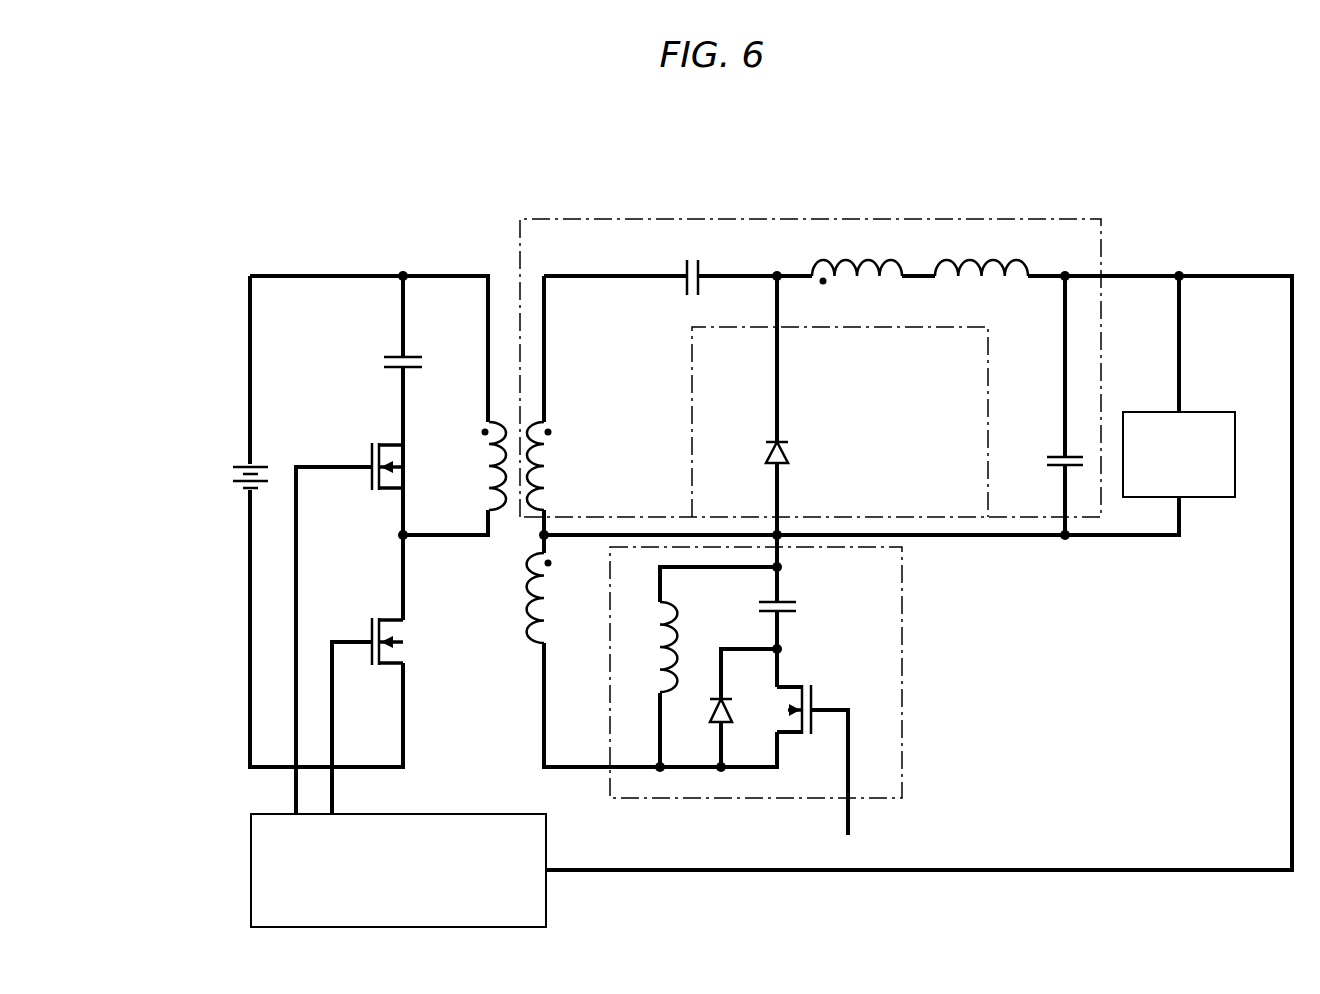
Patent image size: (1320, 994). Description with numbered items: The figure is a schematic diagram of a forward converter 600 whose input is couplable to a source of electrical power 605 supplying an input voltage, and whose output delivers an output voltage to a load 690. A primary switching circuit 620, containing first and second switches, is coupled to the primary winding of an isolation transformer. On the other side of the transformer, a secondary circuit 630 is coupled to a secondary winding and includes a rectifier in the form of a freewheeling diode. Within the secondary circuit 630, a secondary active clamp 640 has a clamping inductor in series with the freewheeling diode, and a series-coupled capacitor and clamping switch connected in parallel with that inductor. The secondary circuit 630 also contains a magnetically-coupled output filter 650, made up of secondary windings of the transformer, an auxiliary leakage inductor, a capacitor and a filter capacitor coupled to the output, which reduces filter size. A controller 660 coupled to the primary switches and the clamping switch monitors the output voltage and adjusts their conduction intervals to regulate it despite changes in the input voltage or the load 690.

The forward converter 600 is at (503, 156).
The source of electrical power 605 is at (234, 472).
The primary switching circuit 620 is at (252, 227).
The secondary circuit 630 is at (1104, 197).
The secondary active clamp 640 is at (756, 691).
The magnetically-coupled output filter 650 is at (887, 422).
The controller 660 is at (398, 870).
The load 690 is at (1179, 454).